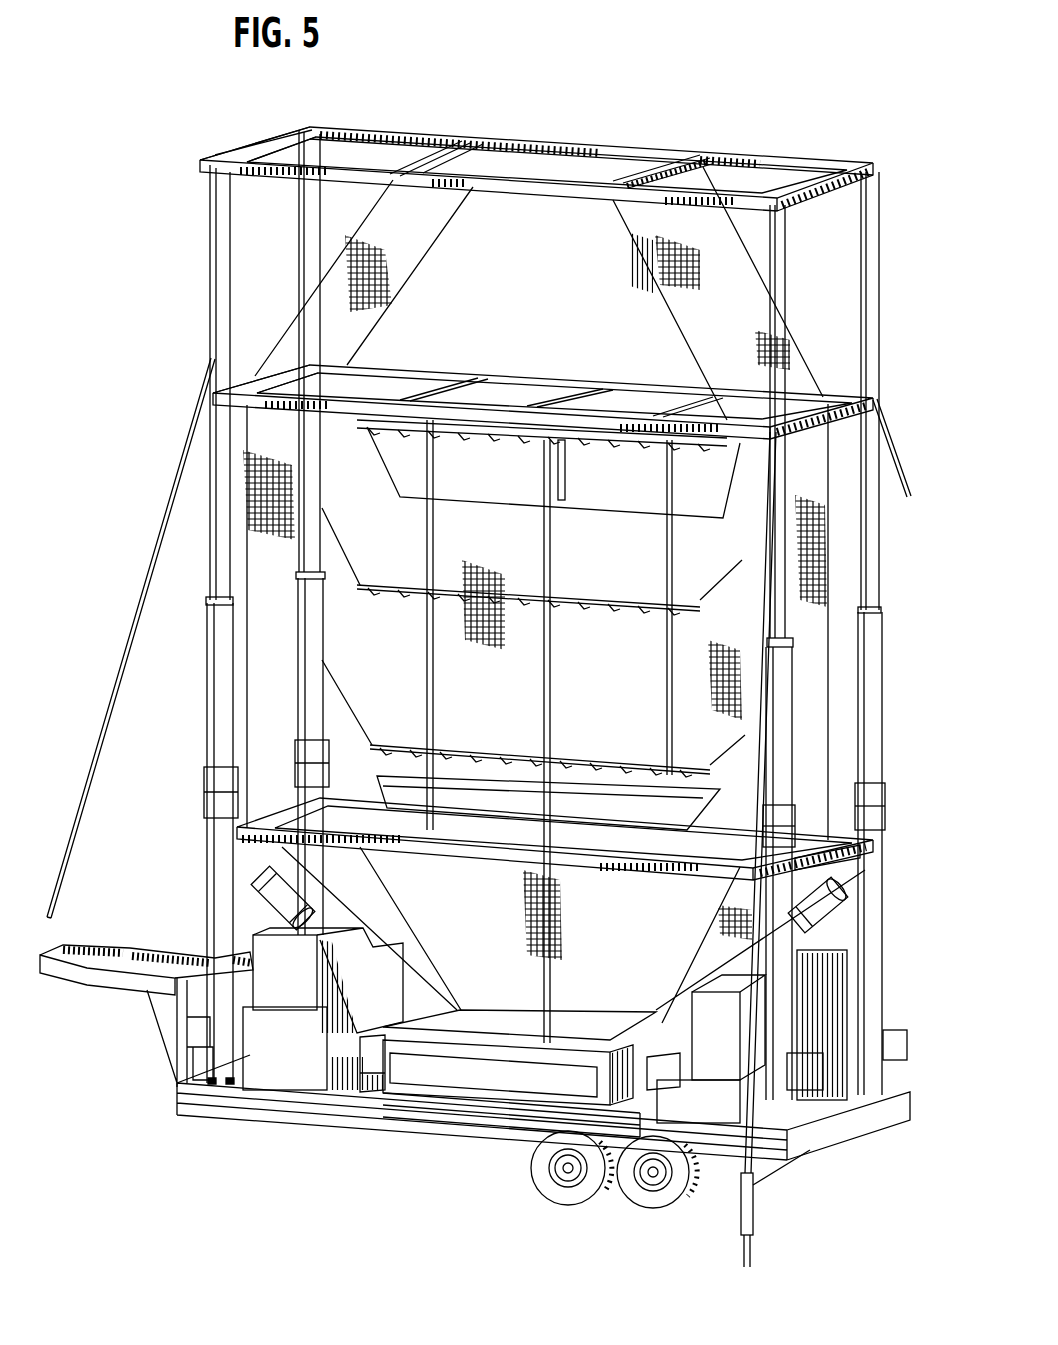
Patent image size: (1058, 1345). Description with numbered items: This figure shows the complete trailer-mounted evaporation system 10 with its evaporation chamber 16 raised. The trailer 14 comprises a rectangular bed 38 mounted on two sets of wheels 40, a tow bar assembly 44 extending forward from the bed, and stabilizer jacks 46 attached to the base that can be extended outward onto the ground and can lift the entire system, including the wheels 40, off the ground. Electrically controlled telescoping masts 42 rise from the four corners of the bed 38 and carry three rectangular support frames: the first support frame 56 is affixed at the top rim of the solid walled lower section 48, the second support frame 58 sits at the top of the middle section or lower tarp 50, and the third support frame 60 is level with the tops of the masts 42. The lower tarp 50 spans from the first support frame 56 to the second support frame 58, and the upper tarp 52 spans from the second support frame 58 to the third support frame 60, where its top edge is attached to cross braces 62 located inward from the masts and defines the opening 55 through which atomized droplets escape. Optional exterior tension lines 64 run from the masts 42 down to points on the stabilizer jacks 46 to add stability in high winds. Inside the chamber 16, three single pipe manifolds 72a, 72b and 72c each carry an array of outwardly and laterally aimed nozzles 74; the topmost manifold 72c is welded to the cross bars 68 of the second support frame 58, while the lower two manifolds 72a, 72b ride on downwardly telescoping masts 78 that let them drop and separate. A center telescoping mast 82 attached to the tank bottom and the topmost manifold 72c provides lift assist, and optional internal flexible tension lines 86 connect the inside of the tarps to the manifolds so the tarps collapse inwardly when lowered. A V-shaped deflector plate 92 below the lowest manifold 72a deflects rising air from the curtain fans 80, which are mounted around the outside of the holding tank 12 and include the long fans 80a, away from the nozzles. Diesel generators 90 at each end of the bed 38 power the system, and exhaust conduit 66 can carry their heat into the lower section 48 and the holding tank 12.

The system 10 is at (150, 205).
The holding tank 12 is at (475, 1098).
The trailer 14 is at (280, 1108).
The evaporation chamber 16 is at (812, 722).
The bed 38 is at (365, 1097).
The wheels 40 is at (558, 1192).
The telescoping masts 42 is at (302, 212).
The tow bar assembly 44 is at (152, 950).
The stabilizer jacks 46 is at (740, 1225).
The lower section 48 is at (812, 873).
The lower tarp 50 is at (815, 470).
The upper tarp 52 is at (810, 382).
The opening 55 is at (533, 147).
The first support frame 56 is at (300, 806).
The second support frame 58 is at (258, 406).
The third support frame 60 is at (272, 142).
The cross braces 62 is at (445, 172).
The exterior tension lines 64 is at (890, 440).
The conduit 66 is at (255, 882).
The cross bars 68 is at (433, 384).
The manifold 72a is at (495, 745).
The manifold 72b is at (453, 590).
The manifold 72c is at (510, 420).
The nozzles 74 is at (620, 445).
The downwardly telescoping masts 78 is at (420, 487).
The curtain fans 80 is at (330, 1082).
The long fans 80a is at (530, 1080).
The center telescoping mast 82 is at (608, 610).
The internal flexible tension lines 86 is at (365, 575).
The diesel generators 90 is at (262, 1075).
The V-shaped deflector plate 92 is at (472, 800).